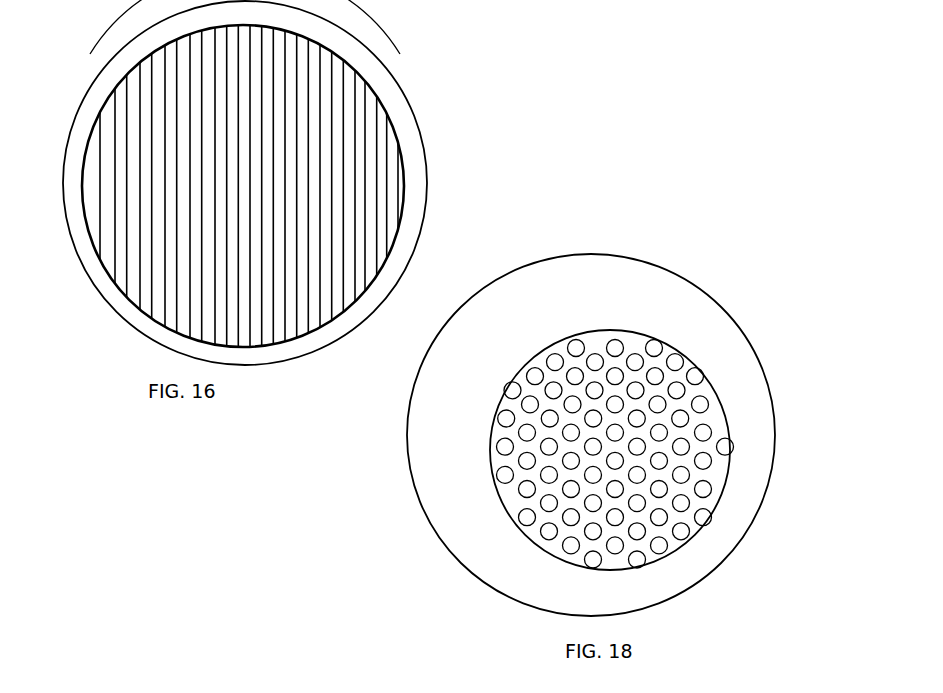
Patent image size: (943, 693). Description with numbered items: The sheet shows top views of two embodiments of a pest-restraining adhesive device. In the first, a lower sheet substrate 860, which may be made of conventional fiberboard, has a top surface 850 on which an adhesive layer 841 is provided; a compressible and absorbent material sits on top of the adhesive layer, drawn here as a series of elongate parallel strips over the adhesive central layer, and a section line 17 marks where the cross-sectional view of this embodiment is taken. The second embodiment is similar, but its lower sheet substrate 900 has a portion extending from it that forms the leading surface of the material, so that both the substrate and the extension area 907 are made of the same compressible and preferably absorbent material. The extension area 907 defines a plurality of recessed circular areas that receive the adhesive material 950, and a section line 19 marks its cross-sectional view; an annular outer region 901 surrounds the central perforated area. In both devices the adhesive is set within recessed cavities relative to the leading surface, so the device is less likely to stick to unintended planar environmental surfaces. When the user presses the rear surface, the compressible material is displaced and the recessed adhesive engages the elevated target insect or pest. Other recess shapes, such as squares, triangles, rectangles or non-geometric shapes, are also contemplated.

In FIG. 16, the adhesive layer 841 is at (93, 233).
In FIG. 16, the top surface 850 is at (418, 212).
In FIG. 16, the lower sheet substrate 860 is at (297, 357).
In FIG. 18, the lower sheet substrate 900 is at (773, 460).
In FIG. 18, the outer ring 901 is at (665, 290).
In FIG. 18, the extension area 907 is at (640, 340).
In FIG. 18, the adhesive material 950 is at (597, 363).
In FIG. 16, the section line 17 is at (461, 146).
In FIG. 18, the section line 19 is at (803, 335).